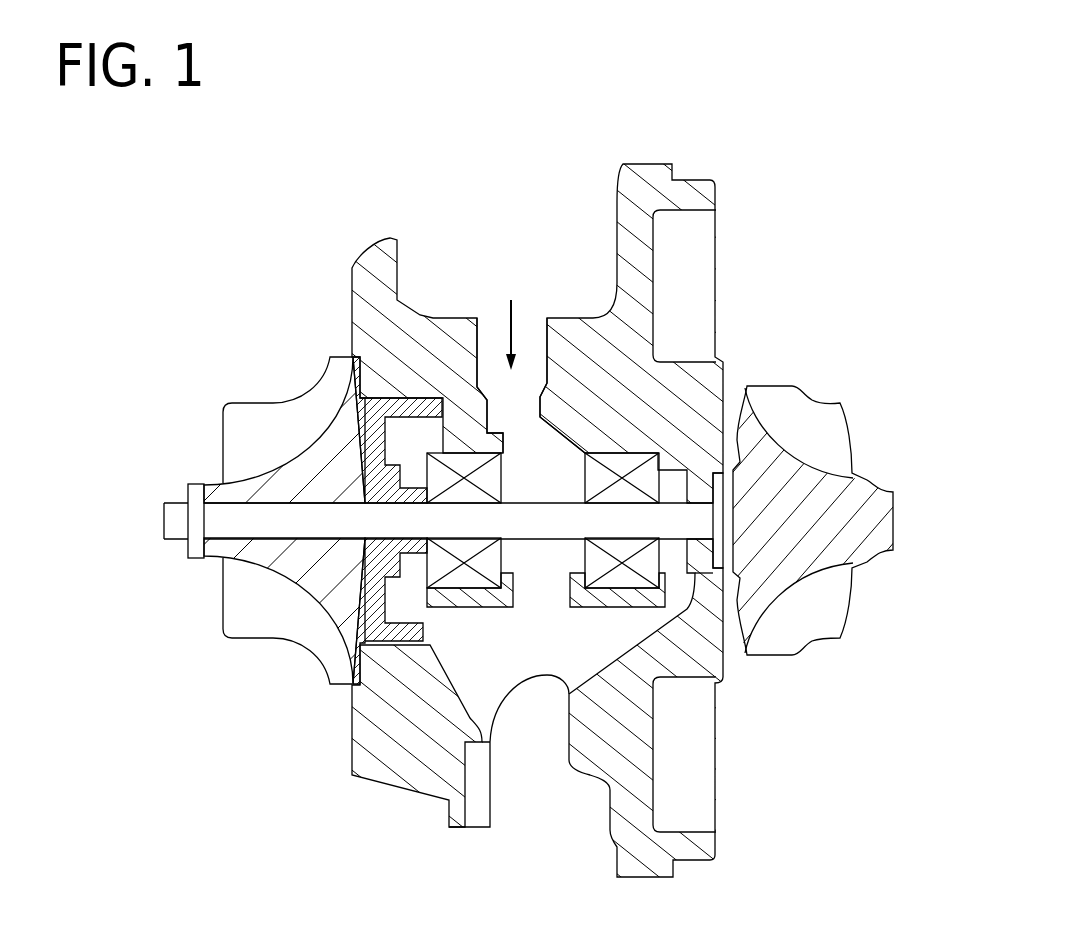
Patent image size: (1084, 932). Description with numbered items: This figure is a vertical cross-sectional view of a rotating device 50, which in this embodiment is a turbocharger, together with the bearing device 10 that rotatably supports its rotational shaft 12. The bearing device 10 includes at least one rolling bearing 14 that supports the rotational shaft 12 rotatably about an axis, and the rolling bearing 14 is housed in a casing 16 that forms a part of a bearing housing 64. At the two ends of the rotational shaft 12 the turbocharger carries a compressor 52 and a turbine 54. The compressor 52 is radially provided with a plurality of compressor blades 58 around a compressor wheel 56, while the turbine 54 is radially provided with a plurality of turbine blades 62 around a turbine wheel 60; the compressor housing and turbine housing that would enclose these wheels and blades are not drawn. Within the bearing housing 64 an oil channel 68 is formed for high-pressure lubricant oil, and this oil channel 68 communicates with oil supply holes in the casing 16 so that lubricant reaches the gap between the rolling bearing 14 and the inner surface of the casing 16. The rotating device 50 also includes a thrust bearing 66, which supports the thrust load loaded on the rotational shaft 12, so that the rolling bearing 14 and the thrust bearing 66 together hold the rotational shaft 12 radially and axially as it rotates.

The rotating device 50 is at (487, 118).
The bearing device 10 is at (634, 415).
The rotational shaft 12 is at (540, 533).
The rolling bearing 14 is at (588, 477).
The casing 16 is at (597, 432).
The compressor 52 is at (256, 400).
The turbine 54 is at (811, 392).
The compressor wheel 56 is at (242, 488).
The compressor blades 58 is at (237, 425).
The turbine wheel 60 is at (830, 488).
The turbine blades 62 is at (833, 428).
The bearing housing 64 is at (433, 327).
The thrust bearing 66 is at (397, 432).
The oil channel 68 is at (490, 343).